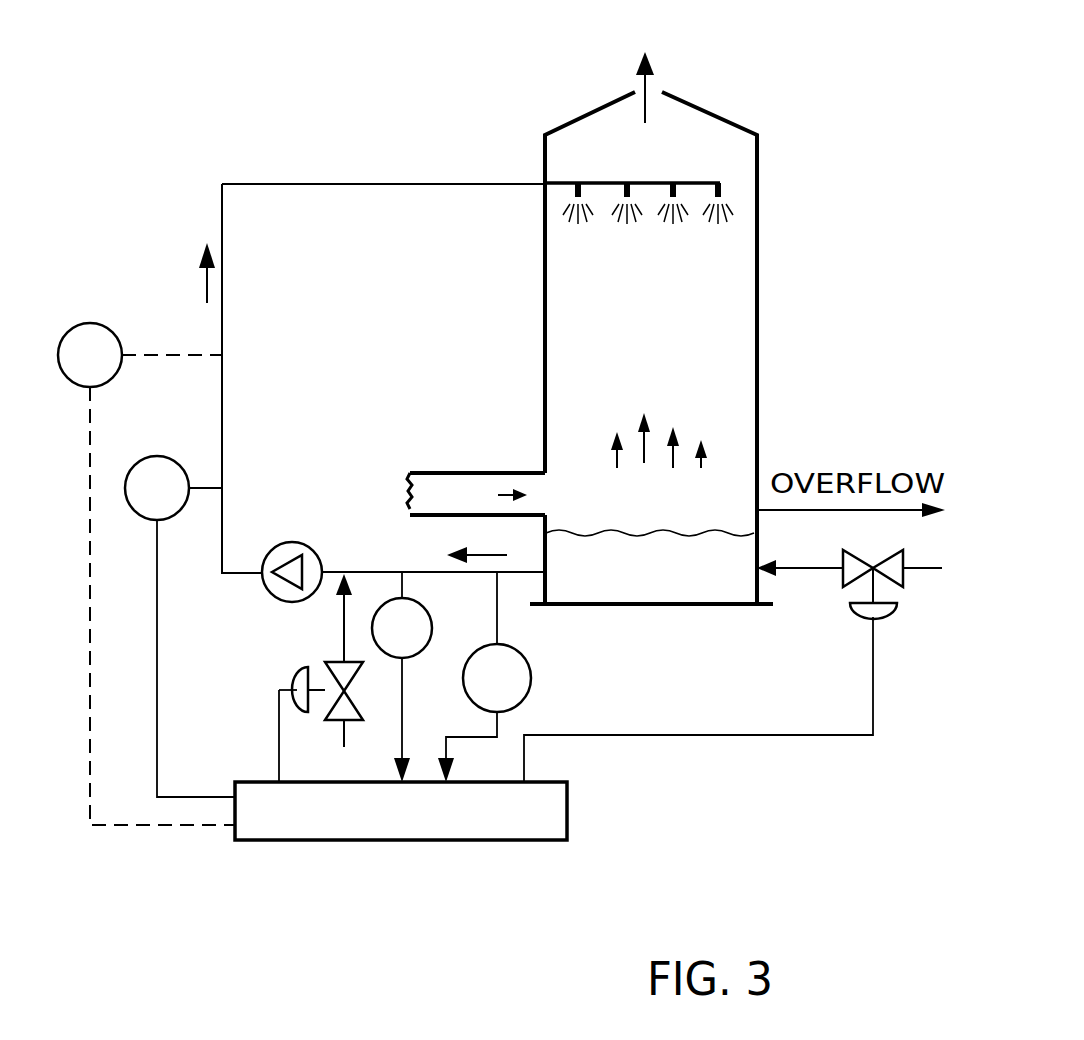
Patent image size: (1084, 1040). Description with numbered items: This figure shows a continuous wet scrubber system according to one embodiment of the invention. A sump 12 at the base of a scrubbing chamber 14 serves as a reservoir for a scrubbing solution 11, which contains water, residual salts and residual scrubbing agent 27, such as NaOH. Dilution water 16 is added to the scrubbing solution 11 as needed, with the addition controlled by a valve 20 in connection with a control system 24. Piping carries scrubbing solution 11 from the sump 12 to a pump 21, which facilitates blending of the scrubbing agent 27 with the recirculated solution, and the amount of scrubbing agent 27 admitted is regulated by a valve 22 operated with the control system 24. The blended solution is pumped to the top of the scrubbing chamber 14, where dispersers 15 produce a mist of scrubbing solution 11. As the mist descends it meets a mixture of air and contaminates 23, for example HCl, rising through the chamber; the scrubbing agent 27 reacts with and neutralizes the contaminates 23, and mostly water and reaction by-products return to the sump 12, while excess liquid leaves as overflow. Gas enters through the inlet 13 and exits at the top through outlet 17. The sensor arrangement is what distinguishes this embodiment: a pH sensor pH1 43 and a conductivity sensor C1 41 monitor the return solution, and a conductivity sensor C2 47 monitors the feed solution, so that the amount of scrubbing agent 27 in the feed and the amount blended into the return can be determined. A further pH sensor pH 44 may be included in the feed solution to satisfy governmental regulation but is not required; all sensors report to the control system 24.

The scrubbing solution 11 is at (668, 589).
The sump 12 is at (693, 607).
The gas inlet 13 is at (491, 507).
The scrubbing chamber 14 is at (757, 223).
The dispersers 15 is at (721, 183).
The dilution water 16 is at (817, 570).
The gas outlet 17 is at (688, 61).
The valve 20 is at (883, 615).
The pump 21 is at (302, 537).
The valve 22 is at (297, 676).
The contaminates 23 is at (661, 499).
The control system 24 is at (416, 826).
The scrubbing agent 27 is at (343, 623).
The conductivity sensor C1 41 is at (422, 603).
The pH sensor pH1 43 is at (532, 673).
The pH sensor pH 44 is at (83, 322).
The conductivity sensor C2 47 is at (148, 456).